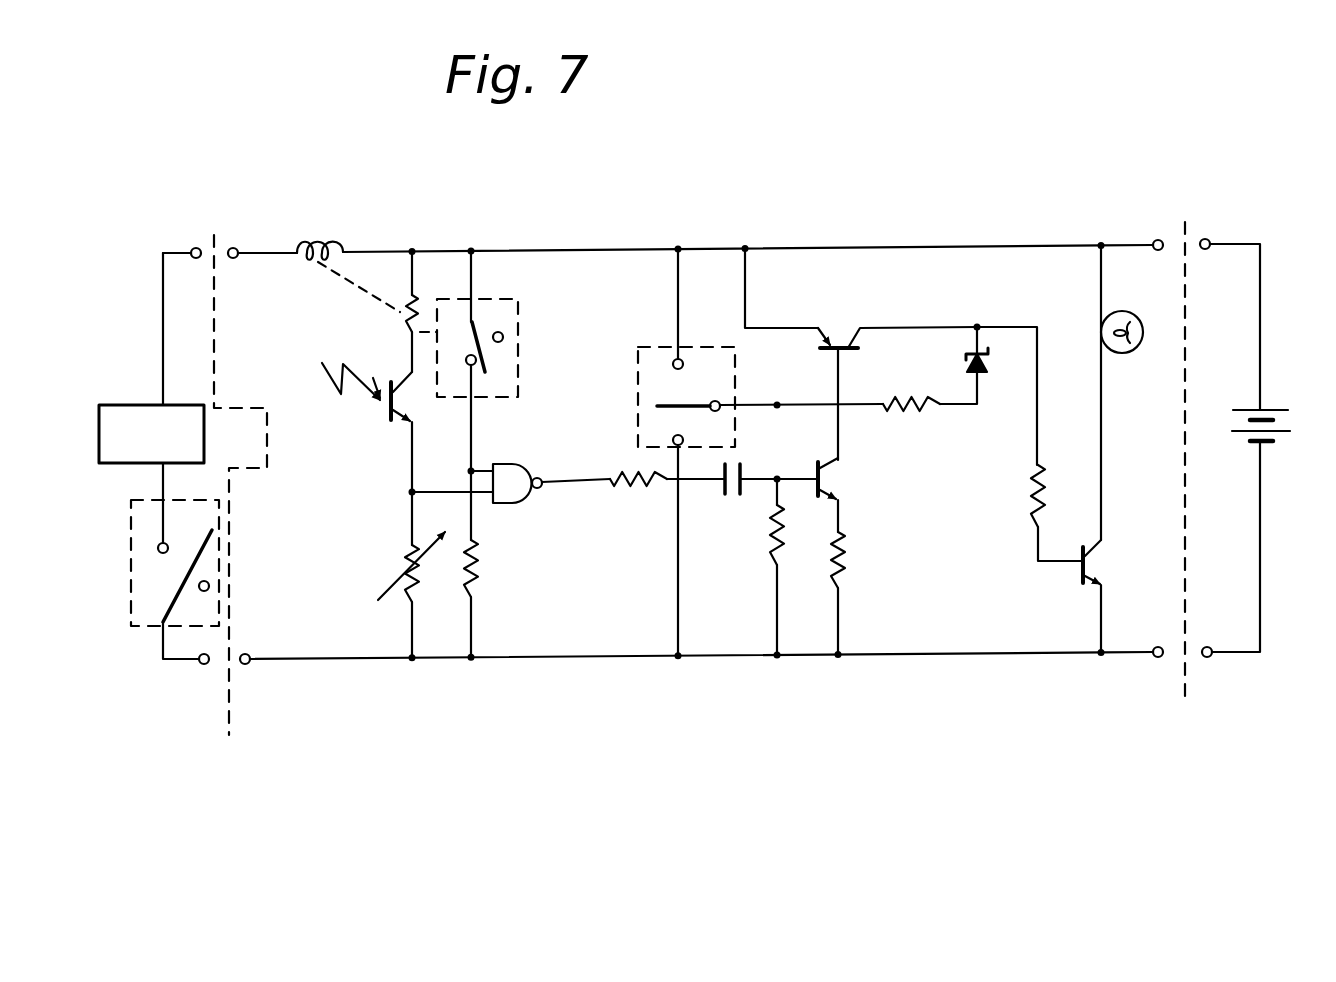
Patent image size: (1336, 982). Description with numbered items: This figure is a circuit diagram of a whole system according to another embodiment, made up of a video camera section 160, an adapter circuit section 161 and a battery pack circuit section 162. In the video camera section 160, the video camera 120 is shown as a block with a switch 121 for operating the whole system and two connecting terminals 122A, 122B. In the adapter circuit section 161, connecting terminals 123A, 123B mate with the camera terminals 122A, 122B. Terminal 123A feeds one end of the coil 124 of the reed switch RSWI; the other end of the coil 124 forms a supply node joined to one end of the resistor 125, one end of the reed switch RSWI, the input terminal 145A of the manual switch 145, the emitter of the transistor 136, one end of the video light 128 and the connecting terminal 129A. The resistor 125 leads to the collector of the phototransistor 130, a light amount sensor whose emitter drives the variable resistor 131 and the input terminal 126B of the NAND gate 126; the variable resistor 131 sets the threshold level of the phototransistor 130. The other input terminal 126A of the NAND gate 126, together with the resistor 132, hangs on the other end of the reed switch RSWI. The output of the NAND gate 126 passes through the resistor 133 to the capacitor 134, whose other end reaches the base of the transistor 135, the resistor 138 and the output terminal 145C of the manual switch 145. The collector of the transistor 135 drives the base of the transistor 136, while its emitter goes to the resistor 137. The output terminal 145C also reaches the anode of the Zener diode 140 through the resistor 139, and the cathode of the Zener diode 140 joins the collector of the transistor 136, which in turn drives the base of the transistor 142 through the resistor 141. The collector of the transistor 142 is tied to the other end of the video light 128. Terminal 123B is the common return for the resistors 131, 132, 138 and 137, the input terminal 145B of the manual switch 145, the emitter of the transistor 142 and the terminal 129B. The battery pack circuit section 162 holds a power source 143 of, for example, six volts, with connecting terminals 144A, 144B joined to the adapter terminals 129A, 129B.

The video camera 120 is at (108, 398).
The switch 121 is at (137, 627).
The connecting terminal 122A is at (199, 260).
The connecting terminal 122B is at (200, 665).
The connecting terminal 123A is at (236, 248).
The connecting terminal 123B is at (250, 665).
The coil 124 is at (322, 244).
The resistor 125 is at (403, 330).
The NAND gate 126 is at (527, 488).
The input terminal of NAND gate 126A is at (480, 468).
The input terminal of NAND gate 126B is at (487, 497).
The video light 128 is at (1097, 333).
The connecting terminal 129A is at (1156, 240).
The connecting terminal 129B is at (1152, 659).
The phototransistor 130 is at (385, 406).
The variable resistor 131 is at (400, 572).
The resistor 132 is at (479, 585).
The resistor 133 is at (637, 488).
The capacitor 134 is at (735, 492).
The transistor 135 is at (828, 470).
The transistor 136 is at (838, 342).
The resistor 137 is at (842, 550).
The resistor 138 is at (770, 552).
The resistor 139 is at (906, 410).
The Zener diode 140 is at (985, 358).
The resistor 141 is at (1030, 506).
The transistor 142 is at (1095, 558).
The power source 143 is at (1244, 408).
The connecting terminal 144A is at (1205, 251).
The connecting terminal 144B is at (1207, 659).
The manual switch 145 is at (650, 346).
The input terminal of manual switch 145A is at (683, 361).
The input terminal of manual switch 145B is at (672, 440).
The output terminal of manual switch 145C is at (760, 392).
The video camera section 160 is at (190, 244).
The adapter circuit section 161 is at (762, 242).
The battery pack circuit section 162 is at (1216, 240).
The reed switch RSWI is at (514, 324).